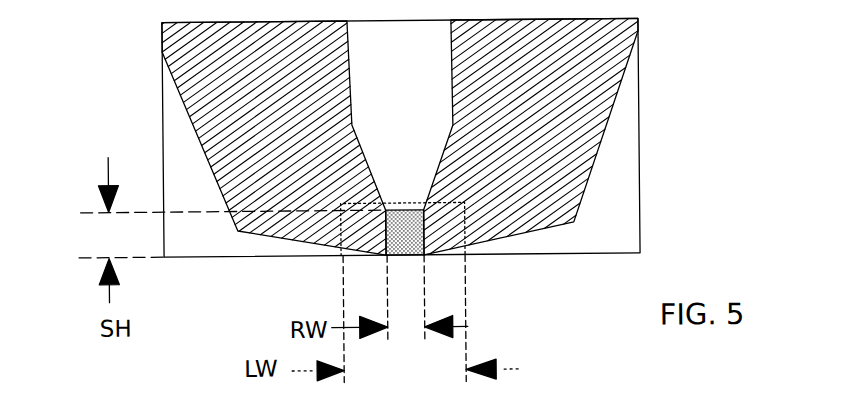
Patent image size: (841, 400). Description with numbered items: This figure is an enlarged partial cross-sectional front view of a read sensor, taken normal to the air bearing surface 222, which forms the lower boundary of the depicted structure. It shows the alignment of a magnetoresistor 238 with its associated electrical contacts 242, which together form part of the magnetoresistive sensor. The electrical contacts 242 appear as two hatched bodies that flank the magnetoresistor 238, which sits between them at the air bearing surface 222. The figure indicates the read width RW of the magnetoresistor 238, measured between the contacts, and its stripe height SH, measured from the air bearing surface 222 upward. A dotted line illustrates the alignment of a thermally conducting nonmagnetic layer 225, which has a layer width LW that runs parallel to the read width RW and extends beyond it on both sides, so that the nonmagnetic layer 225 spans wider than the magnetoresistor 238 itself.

The air bearing surface 222 is at (598, 256).
The thermally conducting nonmagnetic layer 225 is at (403, 207).
The magnetoresistor 238 is at (402, 242).
The electrical contacts 242 is at (197, 134).